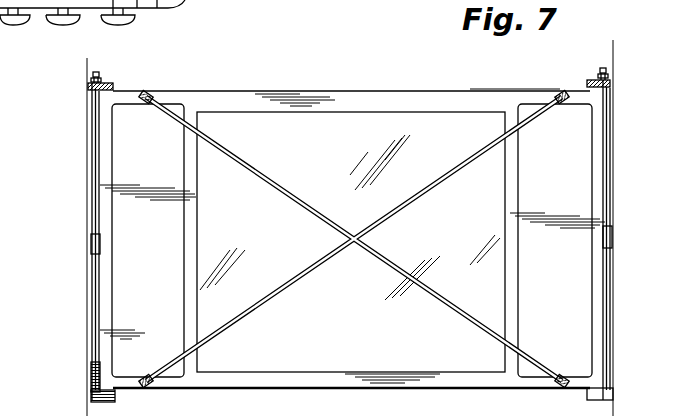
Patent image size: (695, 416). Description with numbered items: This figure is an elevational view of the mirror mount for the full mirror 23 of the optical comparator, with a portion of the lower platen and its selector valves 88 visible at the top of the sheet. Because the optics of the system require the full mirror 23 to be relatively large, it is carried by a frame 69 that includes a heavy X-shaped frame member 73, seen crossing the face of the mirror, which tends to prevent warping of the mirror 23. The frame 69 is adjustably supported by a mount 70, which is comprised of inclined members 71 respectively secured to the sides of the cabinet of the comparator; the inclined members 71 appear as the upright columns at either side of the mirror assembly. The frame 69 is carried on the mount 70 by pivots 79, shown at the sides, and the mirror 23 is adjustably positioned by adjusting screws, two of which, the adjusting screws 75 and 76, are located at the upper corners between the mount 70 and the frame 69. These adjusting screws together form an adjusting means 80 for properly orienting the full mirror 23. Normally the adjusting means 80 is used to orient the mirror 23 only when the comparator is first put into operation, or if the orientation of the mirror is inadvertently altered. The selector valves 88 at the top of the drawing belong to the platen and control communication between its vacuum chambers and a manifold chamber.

The full mirror 23 is at (351, 242).
The frame 69 is at (296, 389).
The mount 70 is at (349, 241).
The inclined members 71 is at (92, 302).
The X-shaped frame member 73 is at (280, 186).
The adjusting screw 75 is at (598, 72).
The adjusting screw 76 is at (102, 77).
The pivots 79 is at (94, 244).
The adjusting means 80 is at (620, 75).
The selector valves 88 is at (22, 20).